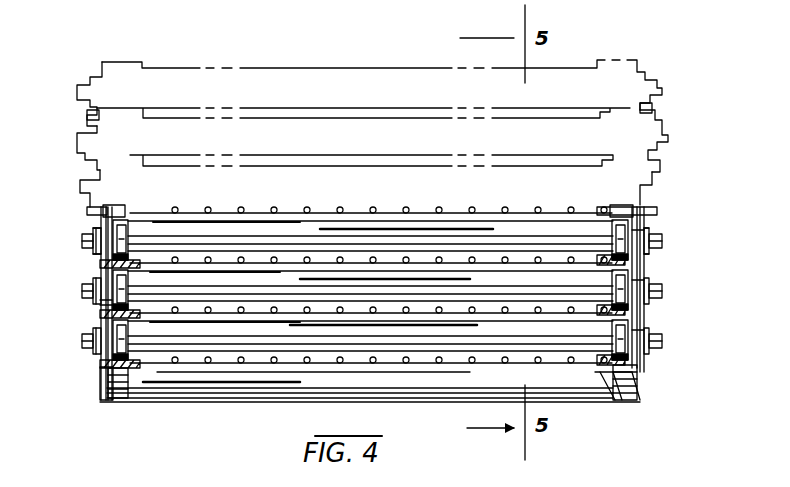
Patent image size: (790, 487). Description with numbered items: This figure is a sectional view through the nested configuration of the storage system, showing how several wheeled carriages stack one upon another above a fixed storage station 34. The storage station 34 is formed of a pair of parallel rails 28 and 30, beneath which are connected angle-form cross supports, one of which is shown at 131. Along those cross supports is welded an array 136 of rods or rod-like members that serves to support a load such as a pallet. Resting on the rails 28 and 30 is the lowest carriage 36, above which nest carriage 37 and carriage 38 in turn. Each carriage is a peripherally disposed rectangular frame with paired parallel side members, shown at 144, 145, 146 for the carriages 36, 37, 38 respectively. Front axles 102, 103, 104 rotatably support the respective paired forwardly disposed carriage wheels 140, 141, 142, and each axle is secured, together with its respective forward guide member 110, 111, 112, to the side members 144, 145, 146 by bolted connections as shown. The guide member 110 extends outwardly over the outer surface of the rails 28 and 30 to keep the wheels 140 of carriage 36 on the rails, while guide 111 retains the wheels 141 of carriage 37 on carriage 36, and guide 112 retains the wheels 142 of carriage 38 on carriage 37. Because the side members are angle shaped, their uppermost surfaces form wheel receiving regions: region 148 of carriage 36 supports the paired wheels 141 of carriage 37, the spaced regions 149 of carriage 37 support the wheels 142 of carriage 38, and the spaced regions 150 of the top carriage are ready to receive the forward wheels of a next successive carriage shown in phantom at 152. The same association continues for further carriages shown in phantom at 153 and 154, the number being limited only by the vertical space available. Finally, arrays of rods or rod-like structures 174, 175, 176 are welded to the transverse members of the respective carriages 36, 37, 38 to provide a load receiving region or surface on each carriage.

The rail 28 is at (636, 384).
The rail 30 is at (102, 397).
The storage station 34 is at (655, 378).
The carriage 36 is at (670, 335).
The carriage 37 is at (672, 277).
The carriage 38 is at (674, 196).
The forward axle 102 is at (78, 343).
The forward axle 103 is at (80, 292).
The forward axle 104 is at (82, 235).
The forward guide member 110 is at (650, 367).
The forward guide member 111 is at (665, 307).
The forward guide member 112 is at (652, 222).
The cross support 131 is at (582, 392).
The array of rods 136 is at (290, 372).
The forward carriage wheels 140 is at (120, 365).
The forward carriage wheels 141 is at (93, 273).
The forward carriage wheels 142 is at (128, 212).
The side member 144 is at (88, 368).
The side member 145 is at (93, 265).
The side member 146 is at (90, 208).
The wheel receiving region 148 is at (93, 318).
The wheel receiving region 149 is at (88, 250).
The wheel receiving region 150 is at (115, 205).
The phantom carriage 152 is at (653, 203).
The phantom carriage 153 is at (658, 137).
The phantom carriage 154 is at (662, 80).
The array of rods 174 is at (365, 305).
The array of rods 175 is at (458, 258).
The array of rods 176 is at (553, 175).